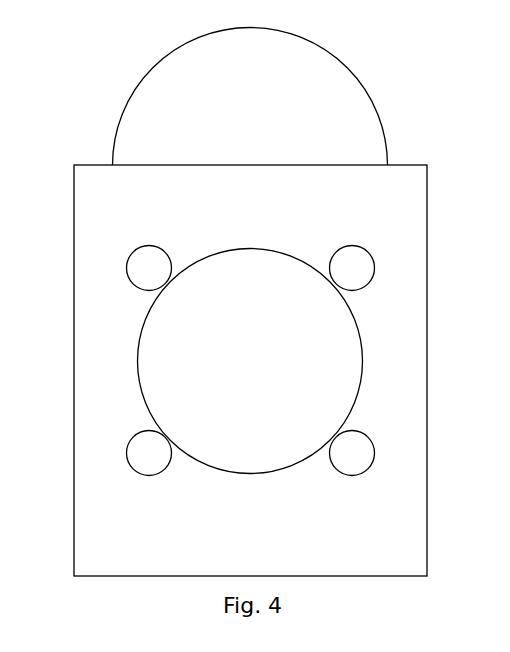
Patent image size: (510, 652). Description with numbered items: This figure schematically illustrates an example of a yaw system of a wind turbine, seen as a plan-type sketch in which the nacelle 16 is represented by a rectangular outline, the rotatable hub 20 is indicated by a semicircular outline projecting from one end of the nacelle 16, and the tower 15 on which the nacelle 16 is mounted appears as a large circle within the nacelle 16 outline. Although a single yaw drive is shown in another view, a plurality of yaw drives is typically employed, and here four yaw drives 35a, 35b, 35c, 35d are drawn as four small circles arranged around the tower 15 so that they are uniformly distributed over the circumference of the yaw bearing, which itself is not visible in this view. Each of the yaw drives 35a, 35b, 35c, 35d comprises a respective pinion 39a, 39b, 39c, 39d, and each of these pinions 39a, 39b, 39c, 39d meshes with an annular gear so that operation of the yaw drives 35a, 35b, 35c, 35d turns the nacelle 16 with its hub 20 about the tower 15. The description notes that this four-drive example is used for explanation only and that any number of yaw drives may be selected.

The tower 15 is at (360, 357).
The nacelle 16 is at (98, 338).
The rotatable hub 20 is at (303, 102).
The yaw drive 35a is at (139, 256).
The yaw drive 35b is at (359, 256).
The yaw drive 35c is at (356, 467).
The yaw drive 35d is at (137, 467).
The pinion 39a is at (156, 256).
The pinion 39b is at (368, 256).
The pinion 39c is at (366, 467).
The pinion 39d is at (156, 467).